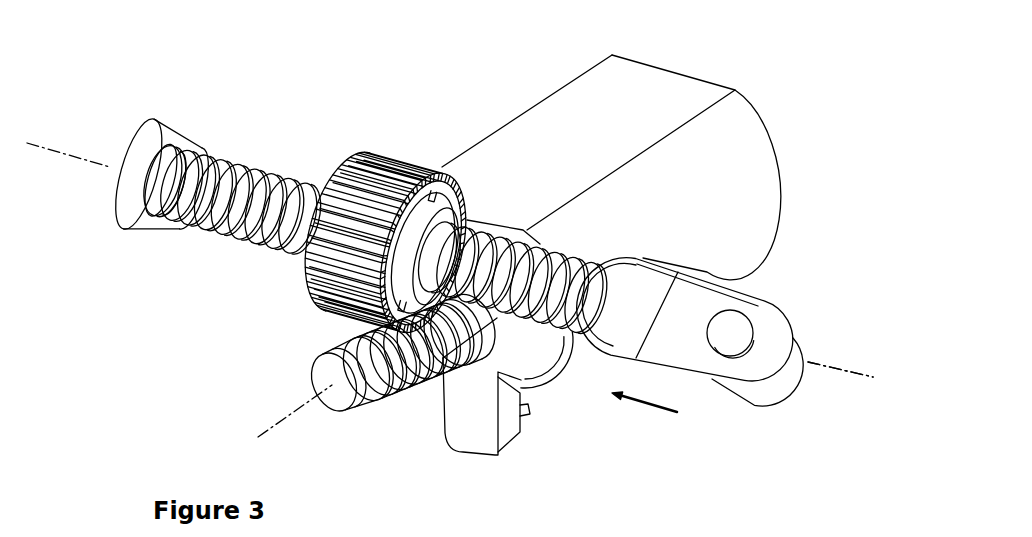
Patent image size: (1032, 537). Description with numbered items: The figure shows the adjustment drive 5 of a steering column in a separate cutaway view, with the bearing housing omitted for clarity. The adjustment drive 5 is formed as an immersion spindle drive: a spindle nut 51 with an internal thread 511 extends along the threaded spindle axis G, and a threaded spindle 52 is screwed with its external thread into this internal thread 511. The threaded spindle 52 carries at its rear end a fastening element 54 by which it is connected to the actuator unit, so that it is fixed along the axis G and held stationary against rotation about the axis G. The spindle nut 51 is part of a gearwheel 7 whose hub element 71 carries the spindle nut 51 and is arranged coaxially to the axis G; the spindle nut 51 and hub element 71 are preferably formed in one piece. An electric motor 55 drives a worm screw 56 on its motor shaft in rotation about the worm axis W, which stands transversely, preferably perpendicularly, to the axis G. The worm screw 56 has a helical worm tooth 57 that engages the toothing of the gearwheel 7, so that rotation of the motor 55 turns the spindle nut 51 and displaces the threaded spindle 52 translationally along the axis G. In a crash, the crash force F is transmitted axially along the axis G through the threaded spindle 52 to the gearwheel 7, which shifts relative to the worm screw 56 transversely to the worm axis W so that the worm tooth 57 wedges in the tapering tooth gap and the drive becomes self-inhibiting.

The adjustment drive 5 is at (442, 80).
The gearwheel 7 is at (360, 144).
The hub element 71 is at (420, 223).
The spindle nut 51 is at (452, 208).
The internal thread 511 is at (435, 362).
The threaded spindle 52 is at (577, 333).
The fastening element 54 is at (738, 300).
The electric motor 55 is at (655, 92).
The worm screw 56 is at (411, 378).
The worm tooth 57 is at (390, 372).
The worm axis W is at (265, 430).
The threaded spindle axis G is at (873, 377).
The crash force F is at (652, 408).